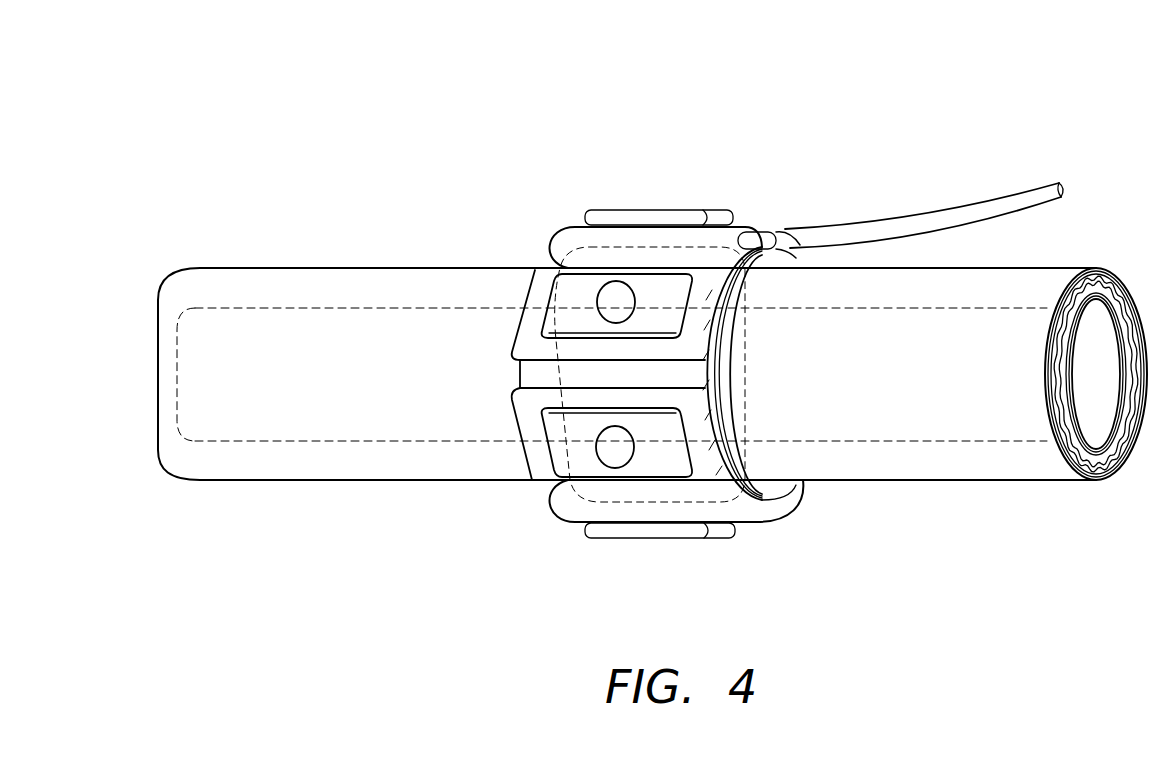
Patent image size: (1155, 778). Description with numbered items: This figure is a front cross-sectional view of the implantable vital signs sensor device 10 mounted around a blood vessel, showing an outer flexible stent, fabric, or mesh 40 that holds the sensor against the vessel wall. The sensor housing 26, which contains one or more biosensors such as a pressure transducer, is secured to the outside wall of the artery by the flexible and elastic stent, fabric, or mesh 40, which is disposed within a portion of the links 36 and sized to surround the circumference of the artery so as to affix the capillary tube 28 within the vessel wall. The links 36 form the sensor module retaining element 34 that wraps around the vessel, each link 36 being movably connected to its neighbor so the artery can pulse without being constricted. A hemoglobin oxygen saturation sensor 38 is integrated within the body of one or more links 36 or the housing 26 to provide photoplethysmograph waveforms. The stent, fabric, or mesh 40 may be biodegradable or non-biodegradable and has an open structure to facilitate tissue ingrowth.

The implantable vital signs sensor device and monitoring system 10 is at (570, 536).
The sensor housing 26 is at (801, 236).
The capillary tube 28 is at (917, 207).
The sensor module retaining element 34 is at (781, 497).
The link 36 is at (703, 473).
The hemoglobin oxygen saturation sensor 38 is at (616, 300).
The flexible stent, fabric, or mesh 40 is at (667, 249).